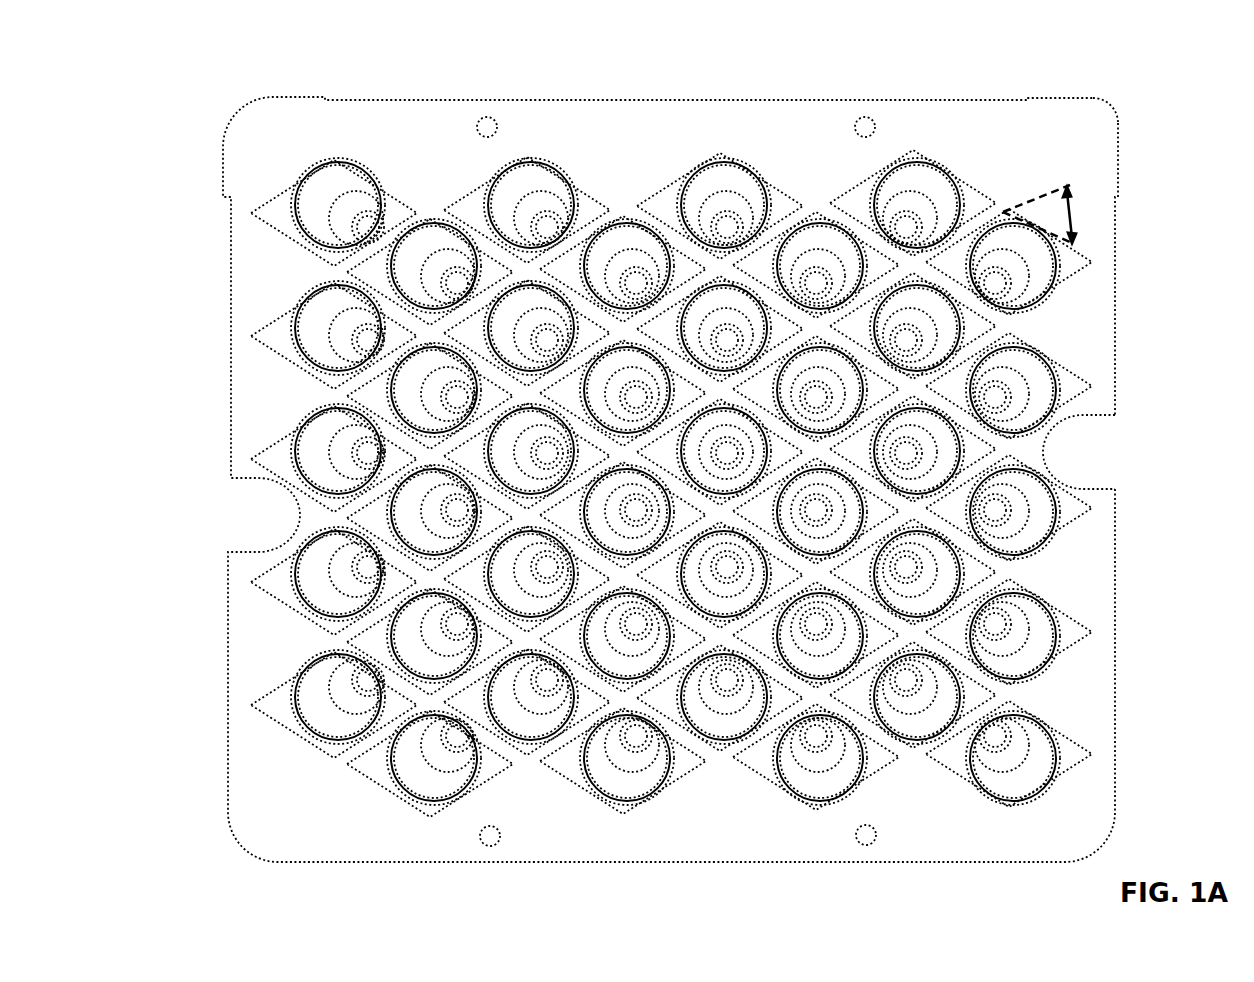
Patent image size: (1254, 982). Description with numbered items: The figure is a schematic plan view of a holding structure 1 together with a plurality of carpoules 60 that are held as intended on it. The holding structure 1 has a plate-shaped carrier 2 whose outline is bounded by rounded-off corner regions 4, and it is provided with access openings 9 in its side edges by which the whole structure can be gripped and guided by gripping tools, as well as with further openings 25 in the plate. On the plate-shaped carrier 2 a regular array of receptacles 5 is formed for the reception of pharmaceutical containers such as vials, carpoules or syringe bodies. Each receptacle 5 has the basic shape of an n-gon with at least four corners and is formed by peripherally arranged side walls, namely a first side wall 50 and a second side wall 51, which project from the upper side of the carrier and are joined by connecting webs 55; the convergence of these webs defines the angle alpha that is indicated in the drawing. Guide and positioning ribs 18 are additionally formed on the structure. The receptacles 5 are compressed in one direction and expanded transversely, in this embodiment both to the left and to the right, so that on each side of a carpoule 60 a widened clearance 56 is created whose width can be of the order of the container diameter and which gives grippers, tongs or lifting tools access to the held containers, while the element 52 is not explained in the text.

The holding structure 1 is at (118, 54).
The plate-shaped carrier 2 is at (958, 122).
The rounded-off corner region 4 is at (1100, 110).
The receptacle 5 is at (596, 222).
The access opening 9 is at (1083, 458).
The guide and positioning rib 18 is at (400, 197).
The opening 25 is at (872, 112).
The first side wall 50 is at (473, 190).
The second side wall 51 is at (975, 233).
The connecting rib 52 is at (998, 710).
The connecting web 55 is at (1003, 212).
The widened clearance for handling 56 is at (1070, 628).
The carpoule/container 60 is at (544, 165).